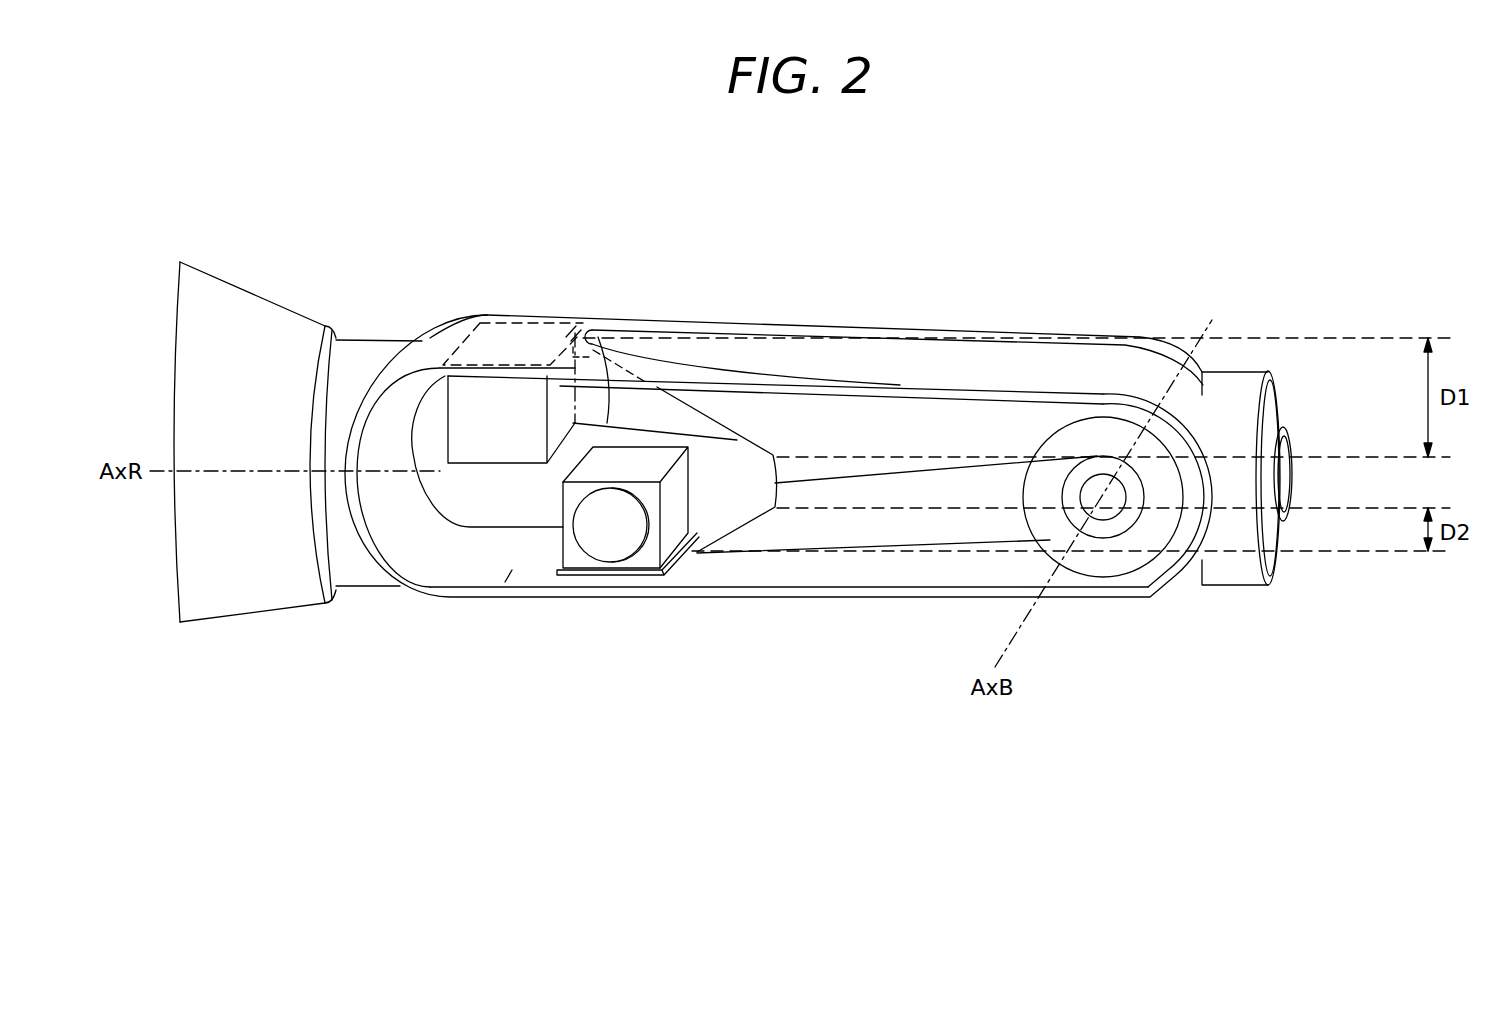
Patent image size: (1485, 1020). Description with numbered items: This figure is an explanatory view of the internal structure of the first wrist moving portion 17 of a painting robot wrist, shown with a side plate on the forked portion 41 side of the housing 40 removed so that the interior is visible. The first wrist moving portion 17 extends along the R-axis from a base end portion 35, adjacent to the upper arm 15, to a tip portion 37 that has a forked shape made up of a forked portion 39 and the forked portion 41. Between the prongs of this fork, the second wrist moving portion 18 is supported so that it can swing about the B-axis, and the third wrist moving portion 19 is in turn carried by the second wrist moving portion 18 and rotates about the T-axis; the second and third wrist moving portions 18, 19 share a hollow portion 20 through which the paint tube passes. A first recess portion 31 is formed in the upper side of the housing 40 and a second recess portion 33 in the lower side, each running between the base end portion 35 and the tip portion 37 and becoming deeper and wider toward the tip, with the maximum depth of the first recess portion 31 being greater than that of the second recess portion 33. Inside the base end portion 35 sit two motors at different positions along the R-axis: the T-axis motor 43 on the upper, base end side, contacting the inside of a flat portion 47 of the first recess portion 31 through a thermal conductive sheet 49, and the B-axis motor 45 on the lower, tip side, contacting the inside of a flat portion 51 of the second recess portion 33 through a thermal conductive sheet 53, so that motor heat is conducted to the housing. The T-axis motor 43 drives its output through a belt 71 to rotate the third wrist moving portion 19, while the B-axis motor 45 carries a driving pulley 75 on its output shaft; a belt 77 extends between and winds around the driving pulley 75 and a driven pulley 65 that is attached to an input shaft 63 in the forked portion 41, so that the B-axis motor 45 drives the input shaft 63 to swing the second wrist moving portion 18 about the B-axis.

The upper arm 15 is at (256, 308).
The first wrist moving portion 17 is at (824, 321).
The second wrist moving portion 18 is at (1238, 378).
The third wrist moving portion 19 is at (1290, 383).
The hollow portion 20 is at (1293, 477).
The first recess portion 31 is at (653, 337).
The second recess portion 33 is at (737, 535).
The base end portion 35 is at (552, 310).
The tip portion 37 is at (1143, 331).
The forked portion 39 is at (902, 328).
The housing 40 is at (727, 316).
The forked portion 41 is at (987, 383).
The T-axis motor 43 is at (492, 437).
The B-axis motor 45 is at (548, 518).
The flat portion 47 is at (510, 337).
The thermal conductive sheet 49 is at (481, 320).
The flat portion 51 is at (505, 582).
The thermal conductive sheet 53 is at (627, 578).
The input shaft 63 is at (1108, 513).
The driven pulley 65 is at (1085, 525).
The belt 71 is at (598, 337).
The driving pulley 75 is at (607, 540).
The belt 77 is at (864, 555).